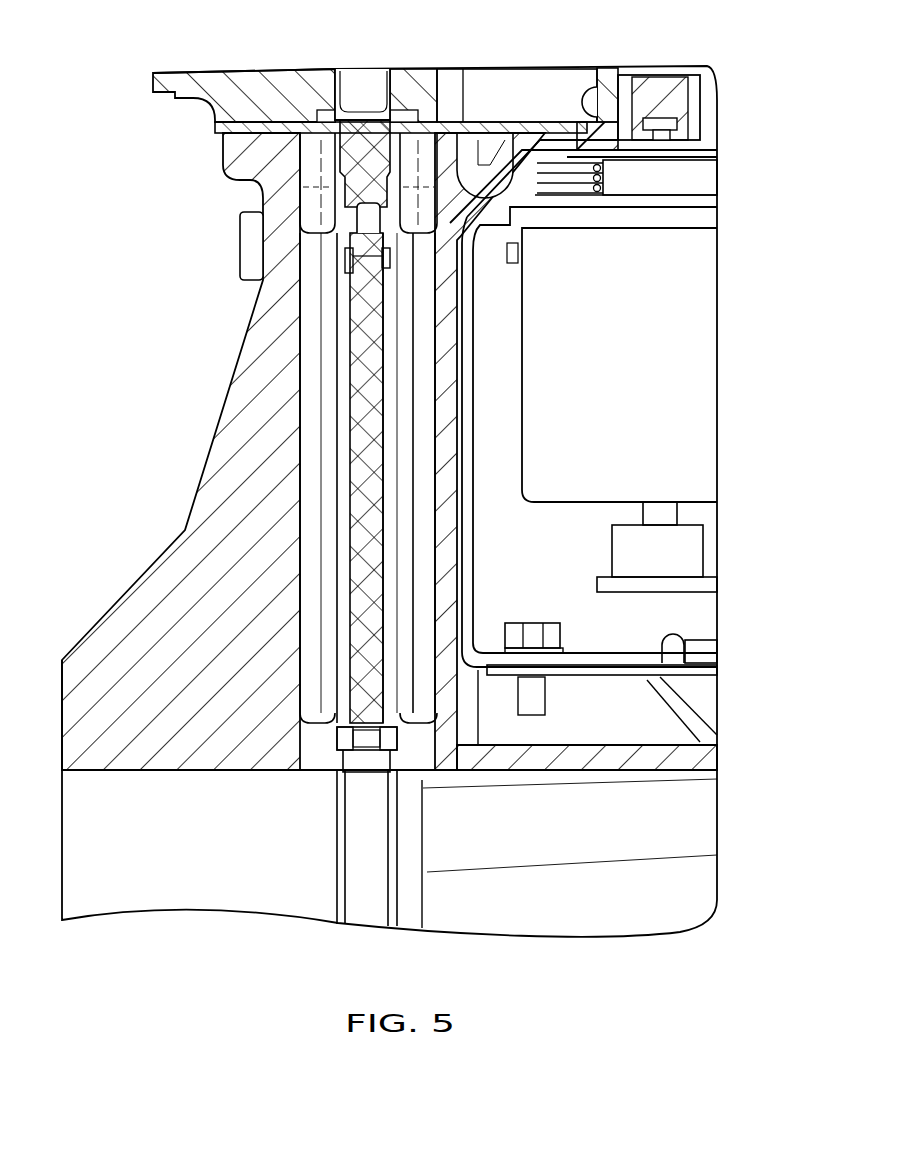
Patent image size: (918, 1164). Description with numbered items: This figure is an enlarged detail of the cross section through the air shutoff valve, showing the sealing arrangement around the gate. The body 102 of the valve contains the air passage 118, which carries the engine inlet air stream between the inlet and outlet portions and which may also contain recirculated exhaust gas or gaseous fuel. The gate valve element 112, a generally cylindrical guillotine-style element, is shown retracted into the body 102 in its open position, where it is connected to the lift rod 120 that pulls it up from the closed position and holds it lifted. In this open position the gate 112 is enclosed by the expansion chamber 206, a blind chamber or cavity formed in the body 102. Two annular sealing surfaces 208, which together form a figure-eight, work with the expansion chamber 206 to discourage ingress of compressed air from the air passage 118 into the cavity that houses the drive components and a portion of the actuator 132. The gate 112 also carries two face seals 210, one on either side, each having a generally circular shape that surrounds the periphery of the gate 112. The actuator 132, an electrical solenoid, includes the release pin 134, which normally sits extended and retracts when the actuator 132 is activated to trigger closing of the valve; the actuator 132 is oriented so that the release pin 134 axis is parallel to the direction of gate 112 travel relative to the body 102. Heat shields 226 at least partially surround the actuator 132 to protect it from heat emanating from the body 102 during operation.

The body 102 is at (95, 650).
The gate valve element 112 is at (362, 575).
The air passage 118 is at (700, 830).
The lift rod 120 is at (372, 78).
The actuator 132 is at (697, 296).
The release pin 134 is at (665, 88).
The expansion chamber 206 is at (312, 480).
The annular sealing surfaces 208 is at (337, 242).
The face seals 210 is at (345, 260).
The heat shields 226 is at (695, 632).